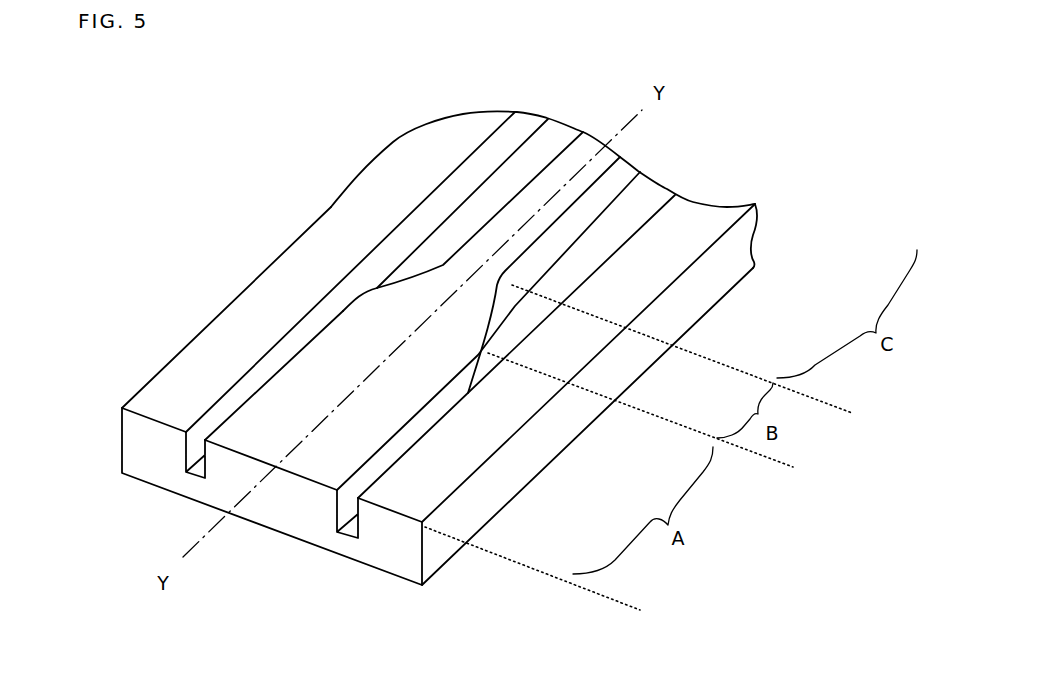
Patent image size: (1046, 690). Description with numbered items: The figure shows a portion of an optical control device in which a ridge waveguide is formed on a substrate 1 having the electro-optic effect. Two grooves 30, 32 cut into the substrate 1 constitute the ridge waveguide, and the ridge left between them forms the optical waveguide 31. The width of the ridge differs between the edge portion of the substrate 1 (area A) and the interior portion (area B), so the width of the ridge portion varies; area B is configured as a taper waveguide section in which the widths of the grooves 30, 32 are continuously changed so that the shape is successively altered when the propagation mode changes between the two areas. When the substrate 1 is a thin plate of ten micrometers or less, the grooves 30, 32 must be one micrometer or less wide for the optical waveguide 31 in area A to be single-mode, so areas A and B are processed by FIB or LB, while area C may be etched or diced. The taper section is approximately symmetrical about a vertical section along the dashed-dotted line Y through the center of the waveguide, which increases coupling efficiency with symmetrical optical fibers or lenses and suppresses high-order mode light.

The substrate 1 is at (172, 448).
The groove 30 is at (362, 264).
The optical waveguide 31 is at (344, 446).
The groove 32 is at (647, 199).